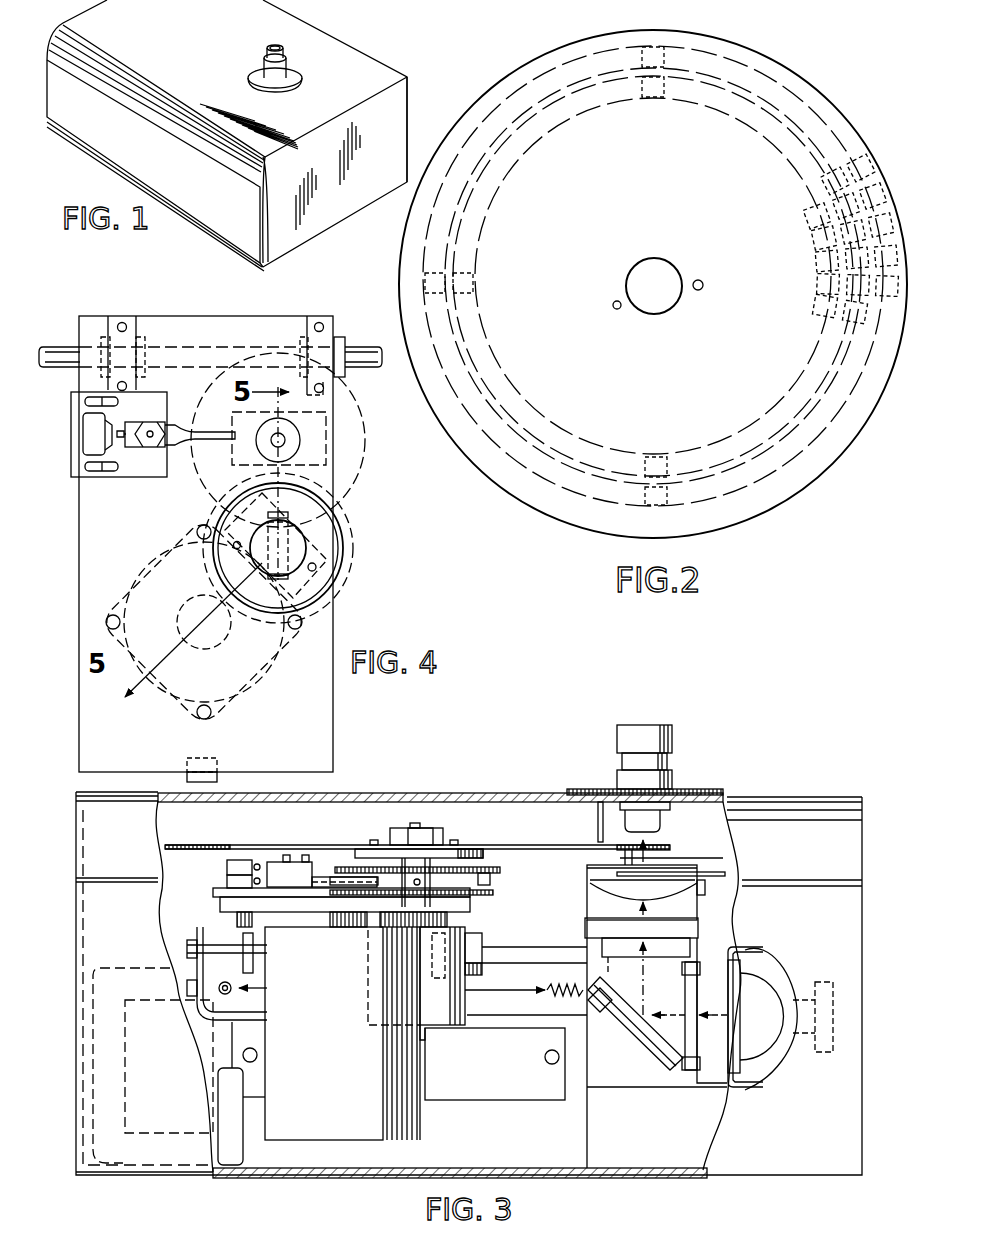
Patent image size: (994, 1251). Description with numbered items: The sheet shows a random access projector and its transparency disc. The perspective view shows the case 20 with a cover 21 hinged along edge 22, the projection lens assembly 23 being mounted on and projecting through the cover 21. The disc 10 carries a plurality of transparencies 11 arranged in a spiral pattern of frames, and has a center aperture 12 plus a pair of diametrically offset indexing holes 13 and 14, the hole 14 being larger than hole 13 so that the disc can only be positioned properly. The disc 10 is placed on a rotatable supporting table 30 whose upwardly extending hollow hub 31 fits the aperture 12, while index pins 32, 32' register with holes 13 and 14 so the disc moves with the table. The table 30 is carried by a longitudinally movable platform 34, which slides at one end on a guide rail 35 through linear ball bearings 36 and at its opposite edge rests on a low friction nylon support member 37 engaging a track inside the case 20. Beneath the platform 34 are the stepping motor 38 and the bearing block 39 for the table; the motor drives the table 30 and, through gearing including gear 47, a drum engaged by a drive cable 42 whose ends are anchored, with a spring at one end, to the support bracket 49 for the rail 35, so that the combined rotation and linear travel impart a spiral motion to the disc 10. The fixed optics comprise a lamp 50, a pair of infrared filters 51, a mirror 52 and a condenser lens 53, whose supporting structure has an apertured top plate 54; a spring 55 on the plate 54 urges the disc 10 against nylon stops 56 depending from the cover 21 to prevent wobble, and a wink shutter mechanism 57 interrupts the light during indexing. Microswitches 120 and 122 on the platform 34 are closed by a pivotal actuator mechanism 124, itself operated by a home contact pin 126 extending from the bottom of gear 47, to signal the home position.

In FIG. 2, the disc 10 is at (777, 61).
In FIG. 3, the disc 10 is at (263, 841).
In FIG. 2, the transparencies 11 is at (863, 163).
In FIG. 2, the aperture 12 is at (646, 258).
In FIG. 2, the indexing hole 13 is at (614, 311).
In FIG. 2, the indexing hole 14 is at (698, 291).
In FIG. 1, the case 20 is at (343, 170).
In FIG. 3, the case 20 is at (805, 1141).
In FIG. 1, the cover 21 is at (180, 49).
In FIG. 3, the cover 21 is at (350, 793).
In FIG. 1, the edge 22 is at (407, 77).
In FIG. 1, the projection lens assembly 23 is at (283, 50).
In FIG. 3, the projection lens assembly 23 is at (672, 740).
In FIG. 4, the rotatable supporting table 30 is at (345, 545).
In FIG. 3, the rotatable supporting table 30 is at (483, 853).
In FIG. 4, the hub 31 is at (296, 529).
In FIG. 3, the hub 31 is at (428, 828).
In FIG. 4, the index pin 32 is at (204, 564).
In FIG. 3, the index pin 32 is at (386, 803).
In FIG. 4, the index pin 32' is at (353, 578).
In FIG. 3, the index pin 32' is at (471, 803).
In FIG. 4, the platform 34 is at (125, 757).
In FIG. 3, the platform 34 is at (223, 906).
In FIG. 4, the guide rail 35 is at (60, 345).
In FIG. 3, the guide rail 35 is at (237, 950).
In FIG. 4, the linear ball bearings 36 is at (142, 335).
In FIG. 3, the linear ball bearings 36 is at (480, 936).
In FIG. 4, the support member 37 is at (220, 776).
In FIG. 4, the stepping motor 38 is at (217, 679).
In FIG. 3, the stepping motor 38 is at (338, 1037).
In FIG. 3, the bearing block 39 is at (447, 1007).
In FIG. 3, the drive cable 42 is at (492, 994).
In FIG. 3, the gear 47 is at (500, 870).
In FIG. 3, the support bracket 49 is at (213, 1023).
In FIG. 3, the lamp 50 is at (768, 978).
In FIG. 3, the infrared filters 51 is at (698, 931).
In FIG. 3, the mirror 52 is at (668, 1054).
In FIG. 3, the condenser lens 53 is at (673, 885).
In FIG. 3, the apertured top plate 54 is at (697, 866).
In FIG. 3, the spring 55 is at (620, 859).
In FIG. 3, the nylon stops 56 is at (593, 818).
In FIG. 3, the wink shutter mechanism 57 is at (717, 873).
In FIG. 3, the microswitch 120 is at (227, 867).
In FIG. 3, the microswitch 122 is at (227, 881).
In FIG. 4, the pivotal actuator mechanism 124 is at (215, 448).
In FIG. 3, the pivotal actuator mechanism 124 is at (293, 865).
In FIG. 3, the home contact pin 126 is at (490, 879).